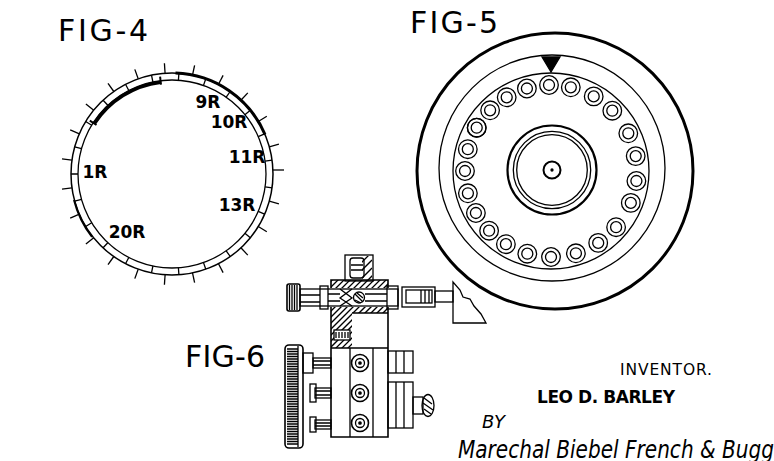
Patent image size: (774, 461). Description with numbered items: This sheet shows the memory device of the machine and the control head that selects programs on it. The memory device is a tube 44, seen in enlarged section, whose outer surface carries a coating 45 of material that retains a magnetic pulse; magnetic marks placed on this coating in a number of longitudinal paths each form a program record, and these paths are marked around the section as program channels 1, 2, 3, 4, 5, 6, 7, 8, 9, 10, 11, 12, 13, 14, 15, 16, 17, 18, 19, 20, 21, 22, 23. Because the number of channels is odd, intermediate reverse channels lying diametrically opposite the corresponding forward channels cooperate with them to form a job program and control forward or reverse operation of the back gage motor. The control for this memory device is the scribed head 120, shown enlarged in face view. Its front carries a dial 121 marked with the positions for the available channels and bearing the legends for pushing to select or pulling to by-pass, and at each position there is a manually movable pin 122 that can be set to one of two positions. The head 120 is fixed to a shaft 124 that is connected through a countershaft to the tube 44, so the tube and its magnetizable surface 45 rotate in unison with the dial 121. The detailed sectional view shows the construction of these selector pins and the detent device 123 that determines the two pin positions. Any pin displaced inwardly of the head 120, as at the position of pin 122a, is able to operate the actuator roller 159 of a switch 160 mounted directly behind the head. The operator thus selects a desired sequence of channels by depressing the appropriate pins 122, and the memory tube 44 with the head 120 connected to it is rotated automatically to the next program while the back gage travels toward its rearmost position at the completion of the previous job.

In FIG. 5, the scribed head 120 is at (447, 86).
In FIG. 6, the scribed head 120 is at (376, 328).
In FIG. 5, the dial 121 is at (485, 147).
In FIG. 5, the manually movable pin 122 is at (630, 131).
In FIG. 6, the manually movable pin 122 is at (287, 298).
In FIG. 6, the inwardly displaced pin 122a is at (410, 357).
In FIG. 6, the detent device 123 is at (352, 284).
In FIG. 6, the shaft 124 is at (415, 418).
In FIG. 6, the actuator roller 159 is at (414, 289).
In FIG. 6, the switch 160 is at (486, 321).
In FIG. 4, the tube 44 is at (127, 99).
In FIG. 4, the surface coating 45 is at (85, 227).
In FIG. 4, the program channel 1 is at (284, 169).
In FIG. 4, the program channel 2 is at (281, 199).
In FIG. 4, the program channel 3 is at (270, 229).
In FIG. 4, the program channel 4 is at (251, 257).
In FIG. 4, the program channel 5 is at (226, 278).
In FIG. 4, the program channel 6 is at (197, 289).
In FIG. 4, the program channel 7 is at (162, 290).
In FIG. 4, the program channel 8 is at (130, 286).
In FIG. 4, the program channel 9 is at (102, 273).
In FIG. 4, the program channel 10 is at (78, 252).
In FIG. 4, the program channel 11 is at (61, 225).
In FIG. 4, the program channel 12 is at (56, 188).
In FIG. 4, the program channel 13 is at (54, 155).
In FIG. 4, the program channel 14 is at (63, 125).
In FIG. 4, the program channel 15 is at (80, 98).
In FIG. 4, the program channel 16 is at (103, 74).
In FIG. 4, the program channel 17 is at (137, 63).
In FIG. 4, the program channel 18 is at (167, 55).
In FIG. 4, the program channel 19 is at (198, 61).
In FIG. 4, the program channel 20 is at (232, 69).
In FIG. 4, the program channel 21 is at (254, 86).
In FIG. 4, the program channel 22 is at (273, 107).
In FIG. 4, the program channel 23 is at (286, 133).